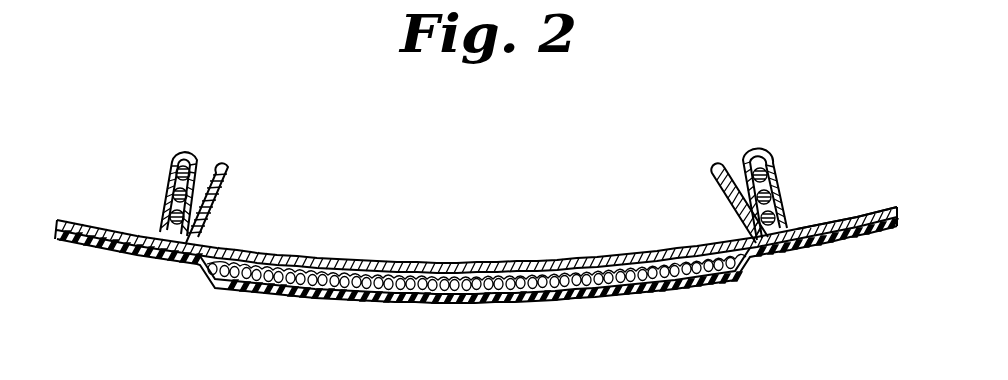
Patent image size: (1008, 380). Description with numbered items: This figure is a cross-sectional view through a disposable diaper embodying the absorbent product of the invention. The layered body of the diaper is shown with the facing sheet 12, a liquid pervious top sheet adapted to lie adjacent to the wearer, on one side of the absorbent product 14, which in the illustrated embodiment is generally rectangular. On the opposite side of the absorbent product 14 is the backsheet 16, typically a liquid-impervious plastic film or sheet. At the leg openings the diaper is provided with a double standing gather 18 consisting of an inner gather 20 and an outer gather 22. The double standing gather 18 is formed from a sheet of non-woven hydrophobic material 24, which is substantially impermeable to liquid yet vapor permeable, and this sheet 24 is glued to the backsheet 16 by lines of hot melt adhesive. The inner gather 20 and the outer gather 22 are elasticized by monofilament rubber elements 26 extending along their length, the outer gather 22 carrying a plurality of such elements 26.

The facing sheet 12 is at (273, 250).
The absorbent product 14 is at (450, 280).
The backsheet 16 is at (303, 293).
The double standing gather 18 is at (742, 153).
The inner gather 20 is at (718, 193).
The outer gather 22 is at (768, 152).
The sheet of non-woven hydrophobic material 24 is at (800, 232).
The monofilament rubber elements 26 is at (755, 172).